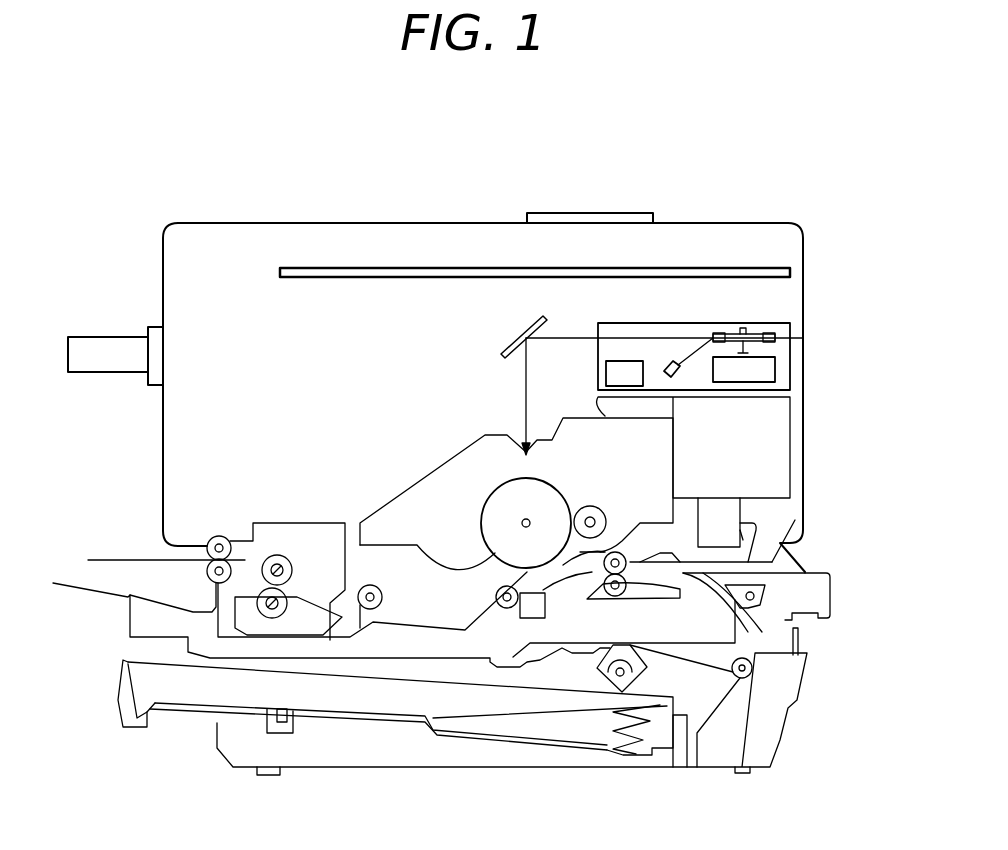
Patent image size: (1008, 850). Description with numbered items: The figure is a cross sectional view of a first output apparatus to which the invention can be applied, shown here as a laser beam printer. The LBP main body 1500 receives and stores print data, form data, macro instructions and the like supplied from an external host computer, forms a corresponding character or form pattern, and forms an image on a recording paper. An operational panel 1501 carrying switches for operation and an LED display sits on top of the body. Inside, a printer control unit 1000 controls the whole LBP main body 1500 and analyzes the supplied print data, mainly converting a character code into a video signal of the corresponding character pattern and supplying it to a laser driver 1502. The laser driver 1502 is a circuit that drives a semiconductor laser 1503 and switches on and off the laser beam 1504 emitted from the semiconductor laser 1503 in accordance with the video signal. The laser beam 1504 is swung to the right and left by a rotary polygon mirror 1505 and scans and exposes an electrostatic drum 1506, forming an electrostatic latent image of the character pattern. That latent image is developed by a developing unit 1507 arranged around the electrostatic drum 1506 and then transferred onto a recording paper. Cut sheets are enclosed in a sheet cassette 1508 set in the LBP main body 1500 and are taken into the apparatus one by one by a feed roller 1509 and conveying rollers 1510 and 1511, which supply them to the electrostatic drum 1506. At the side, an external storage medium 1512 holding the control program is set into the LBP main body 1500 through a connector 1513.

The printer control unit 1000 is at (790, 268).
The LBP main body 1500 is at (755, 223).
The operational panel 1501 is at (620, 213).
The laser driver 1502 is at (606, 377).
The semiconductor laser 1503 is at (679, 375).
The laser beam 1504 is at (652, 338).
The rotary polygon mirror 1505 is at (790, 337).
The electrostatic drum 1506 is at (493, 488).
The developing unit 1507 is at (396, 508).
The sheet cassette 1508 is at (120, 698).
The feed roller 1509 is at (603, 668).
The conveying roller 1510 is at (738, 677).
The conveying roller 1511 is at (602, 600).
The external storage medium 1512 is at (108, 373).
The connector 1513 is at (155, 324).